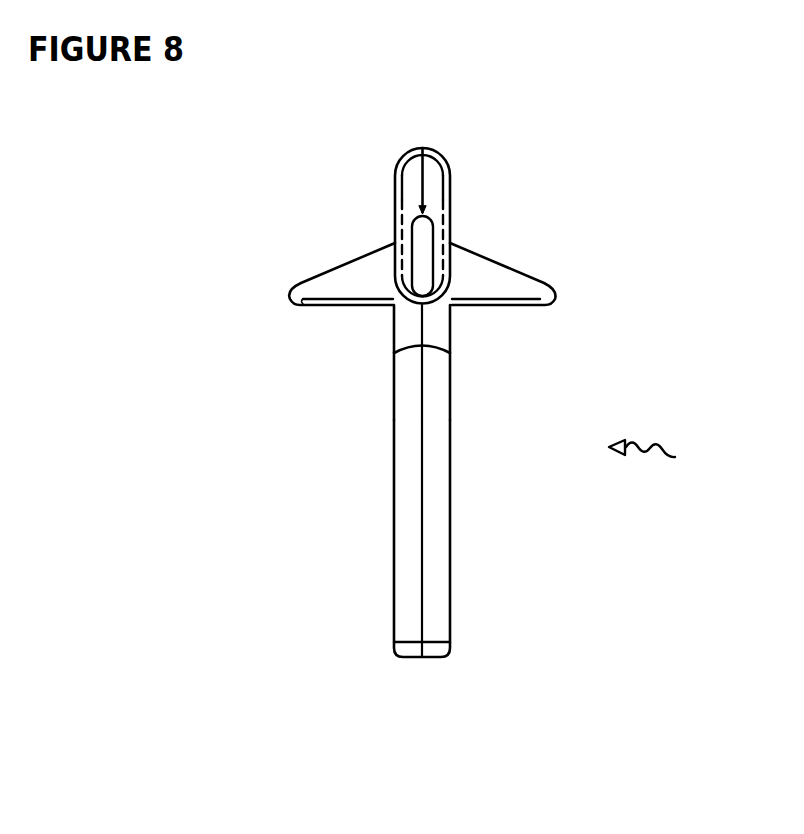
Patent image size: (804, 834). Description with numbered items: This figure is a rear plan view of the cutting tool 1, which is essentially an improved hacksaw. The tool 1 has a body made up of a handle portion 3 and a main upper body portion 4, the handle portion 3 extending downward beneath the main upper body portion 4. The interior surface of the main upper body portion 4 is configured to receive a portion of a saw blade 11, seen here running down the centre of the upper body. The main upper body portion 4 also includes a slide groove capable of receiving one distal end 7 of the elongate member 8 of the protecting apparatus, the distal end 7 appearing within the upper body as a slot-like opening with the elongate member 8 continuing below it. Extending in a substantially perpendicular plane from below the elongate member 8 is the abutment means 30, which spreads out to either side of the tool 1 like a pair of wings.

The tool 1 is at (652, 455).
The handle portion 3 is at (437, 597).
The main upper body portion 4 is at (452, 170).
The distal end 7 is at (424, 270).
The elongate member 8 is at (452, 330).
The saw blade 11 is at (419, 189).
The abutment means 30 is at (305, 307).